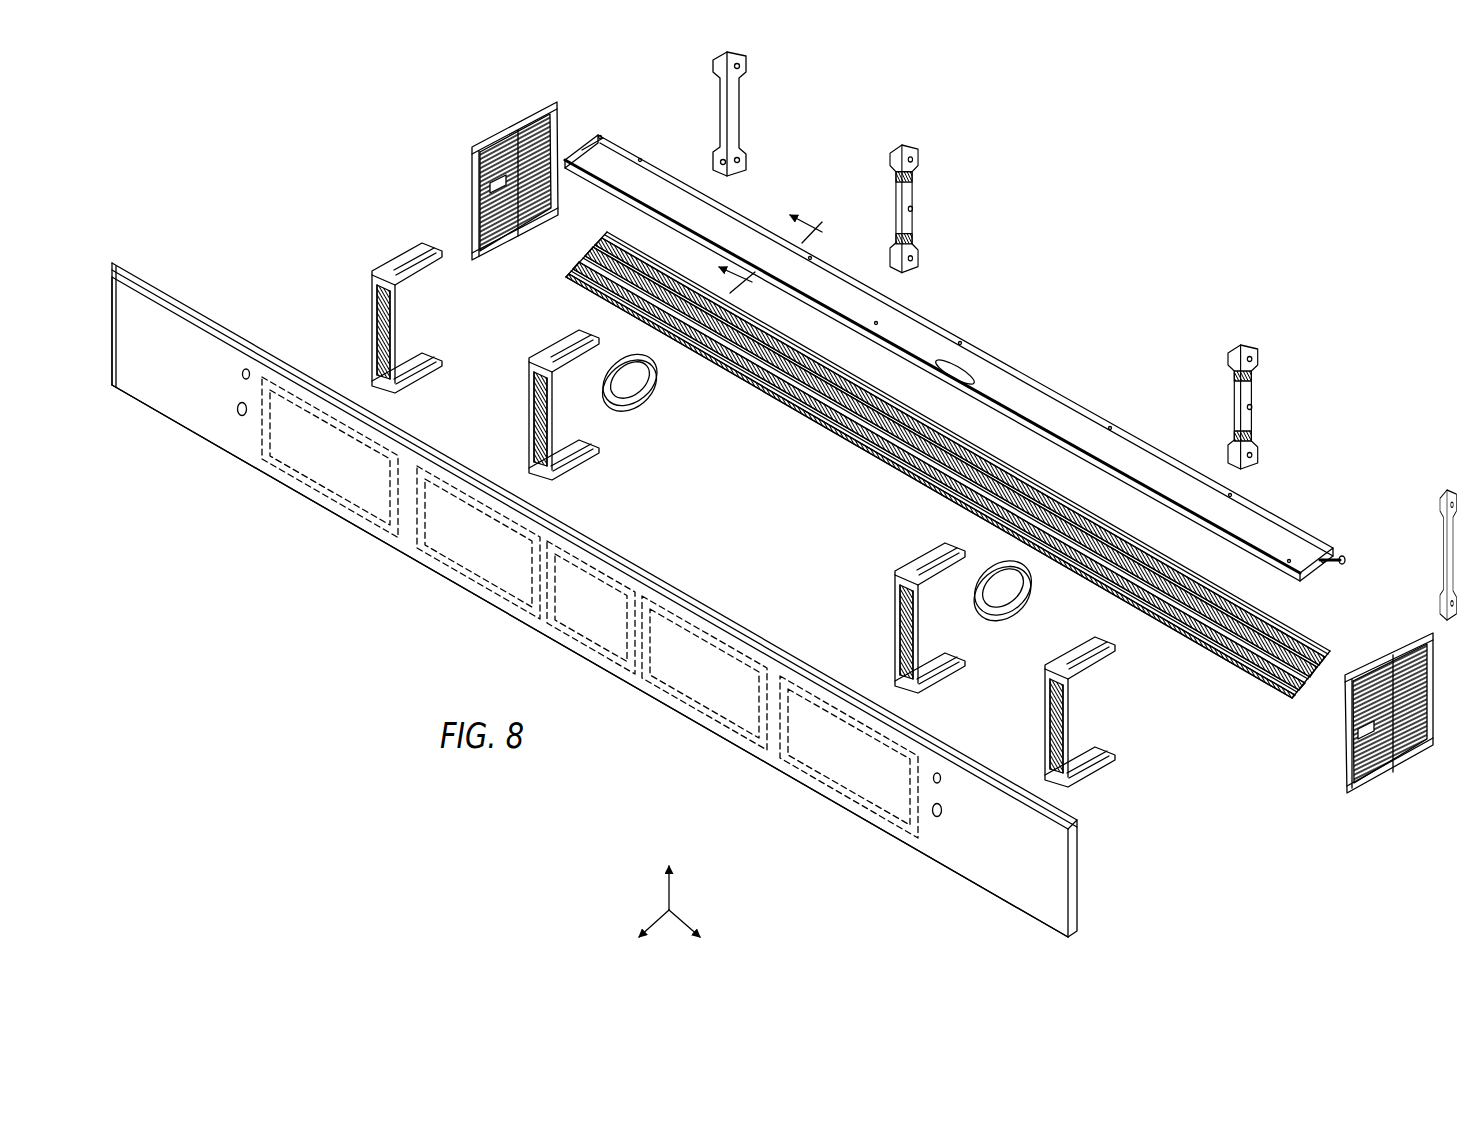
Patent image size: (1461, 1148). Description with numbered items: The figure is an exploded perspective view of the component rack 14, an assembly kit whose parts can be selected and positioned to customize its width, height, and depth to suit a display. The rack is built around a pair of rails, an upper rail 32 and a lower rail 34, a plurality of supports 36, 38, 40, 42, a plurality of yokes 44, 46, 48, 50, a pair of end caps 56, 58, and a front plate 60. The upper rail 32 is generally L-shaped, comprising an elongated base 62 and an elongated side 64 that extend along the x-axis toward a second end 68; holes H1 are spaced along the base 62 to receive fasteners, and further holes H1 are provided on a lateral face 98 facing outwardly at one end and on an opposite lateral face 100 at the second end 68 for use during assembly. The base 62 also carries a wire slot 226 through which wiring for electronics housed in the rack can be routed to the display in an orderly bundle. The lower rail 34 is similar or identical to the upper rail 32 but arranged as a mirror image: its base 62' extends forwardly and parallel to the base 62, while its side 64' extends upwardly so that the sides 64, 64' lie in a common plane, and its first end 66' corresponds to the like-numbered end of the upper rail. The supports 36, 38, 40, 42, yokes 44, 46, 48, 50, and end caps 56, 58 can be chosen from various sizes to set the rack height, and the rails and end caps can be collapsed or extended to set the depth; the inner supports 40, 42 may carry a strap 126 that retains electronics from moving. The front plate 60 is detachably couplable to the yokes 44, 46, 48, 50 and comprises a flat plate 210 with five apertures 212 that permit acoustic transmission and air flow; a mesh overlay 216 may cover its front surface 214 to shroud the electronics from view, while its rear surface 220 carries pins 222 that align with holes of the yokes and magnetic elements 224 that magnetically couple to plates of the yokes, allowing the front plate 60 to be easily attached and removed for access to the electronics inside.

The component rack 14 is at (384, 144).
The upper rail 32 is at (1122, 428).
The lower rail 34 is at (865, 455).
The support 36 is at (1425, 493).
The support 38 is at (752, 52).
The inner support 40 is at (1254, 350).
The inner support 42 is at (912, 143).
The yoke 44 is at (1040, 700).
The yoke 46 is at (880, 628).
The yoke 48 is at (515, 385).
The yoke 50 is at (350, 295).
The end cap 56 is at (1424, 795).
The end cap 58 is at (505, 108).
The front plate 60 is at (375, 570).
The base 62 is at (932, 366).
The base 62' is at (933, 493).
The side 64 is at (1344, 531).
The side 64' is at (939, 476).
The first end 66' is at (941, 523).
The second end 68 is at (580, 138).
The lateral face 98 is at (1300, 572).
The lateral face 100 is at (590, 140).
The strap 126 is at (652, 402).
The flat plate 210 is at (1030, 925).
The apertures 212 is at (792, 758).
The front surface 214 is at (240, 432).
The mesh overlay 216 is at (990, 870).
The rear surface 220 is at (1080, 880).
The pins 222 is at (246, 370).
The magnetic elements 224 is at (240, 412).
The wire slot 226 is at (958, 368).
The holes H1 is at (600, 135).